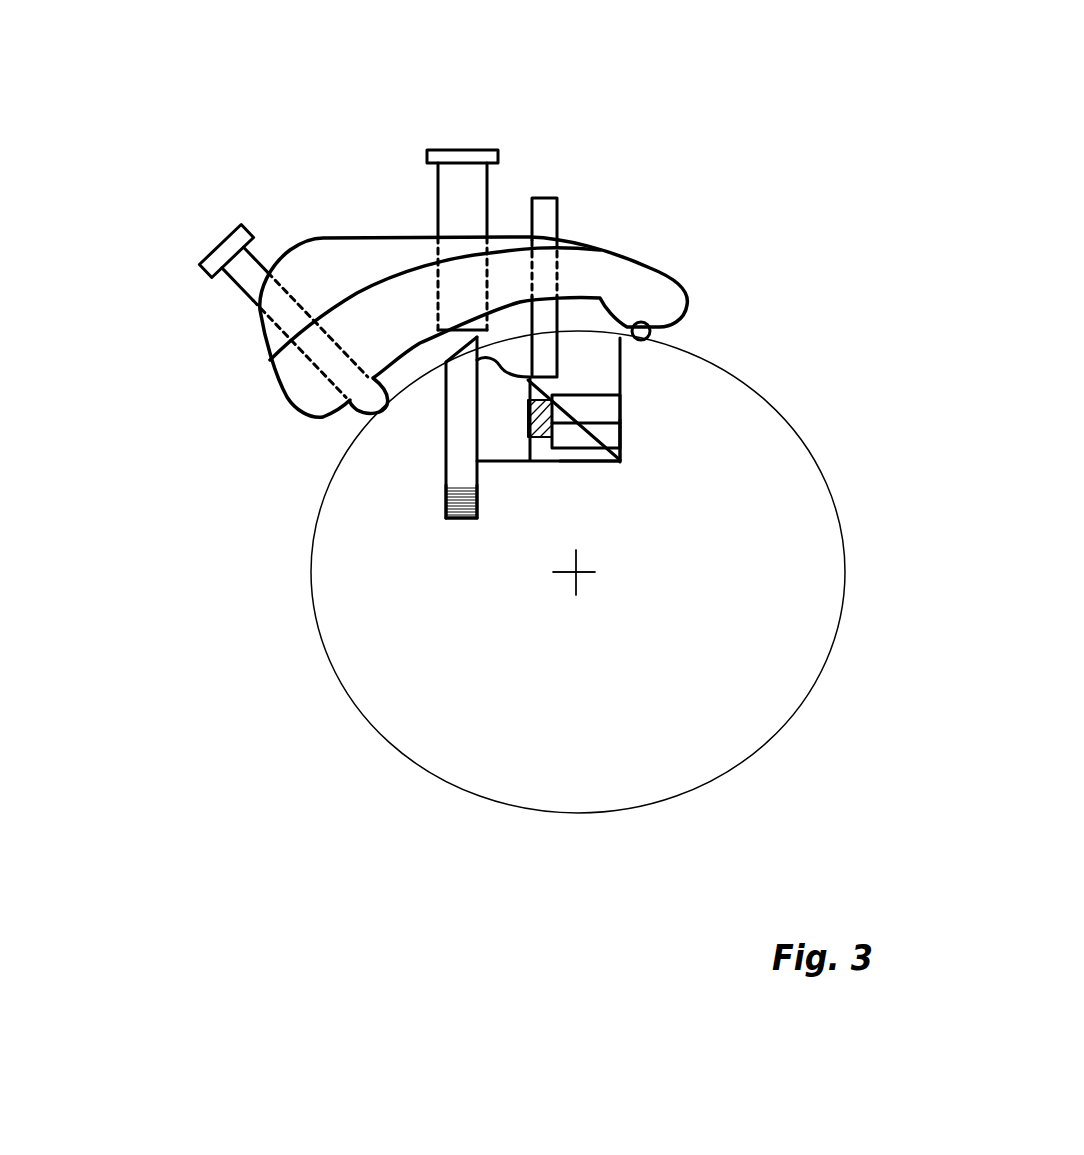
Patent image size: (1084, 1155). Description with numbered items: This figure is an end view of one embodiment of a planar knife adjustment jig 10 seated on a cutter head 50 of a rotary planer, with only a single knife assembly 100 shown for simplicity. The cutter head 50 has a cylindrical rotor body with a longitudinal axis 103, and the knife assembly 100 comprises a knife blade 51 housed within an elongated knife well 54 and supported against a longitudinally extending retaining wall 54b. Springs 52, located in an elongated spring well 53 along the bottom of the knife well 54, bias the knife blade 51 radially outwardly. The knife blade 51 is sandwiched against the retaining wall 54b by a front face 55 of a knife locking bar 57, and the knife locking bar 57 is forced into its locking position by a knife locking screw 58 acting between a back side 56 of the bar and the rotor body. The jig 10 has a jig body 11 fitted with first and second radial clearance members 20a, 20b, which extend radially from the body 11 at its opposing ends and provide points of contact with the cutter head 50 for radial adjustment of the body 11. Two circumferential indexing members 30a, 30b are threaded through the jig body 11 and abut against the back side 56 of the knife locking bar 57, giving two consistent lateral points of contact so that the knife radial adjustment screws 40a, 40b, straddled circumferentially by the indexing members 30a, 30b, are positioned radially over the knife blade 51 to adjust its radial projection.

The planar knife adjustment jig 10 is at (303, 168).
The jig body 11 is at (367, 310).
The first radial clearance member 20a is at (204, 311).
The second radial clearance member 20b is at (247, 267).
The circumferential indexing member 30a is at (694, 262).
The circumferential indexing member 30b is at (540, 223).
The knife radial adjustment screw 40a is at (596, 208).
The knife radial adjustment screw 40b is at (453, 180).
The knife assembly 100 is at (585, 326).
The cutter head 50 is at (519, 558).
The knife blade 51 is at (480, 518).
The springs 52 is at (446, 500).
The spring well 53 is at (453, 513).
The knife well 54 is at (583, 370).
The retaining wall 54b is at (473, 337).
The front face 55 is at (477, 417).
The back side 56 is at (620, 462).
The knife locking bar 57 is at (497, 413).
The knife locking screw 58 is at (600, 413).
The longitudinal axis 103 is at (577, 573).